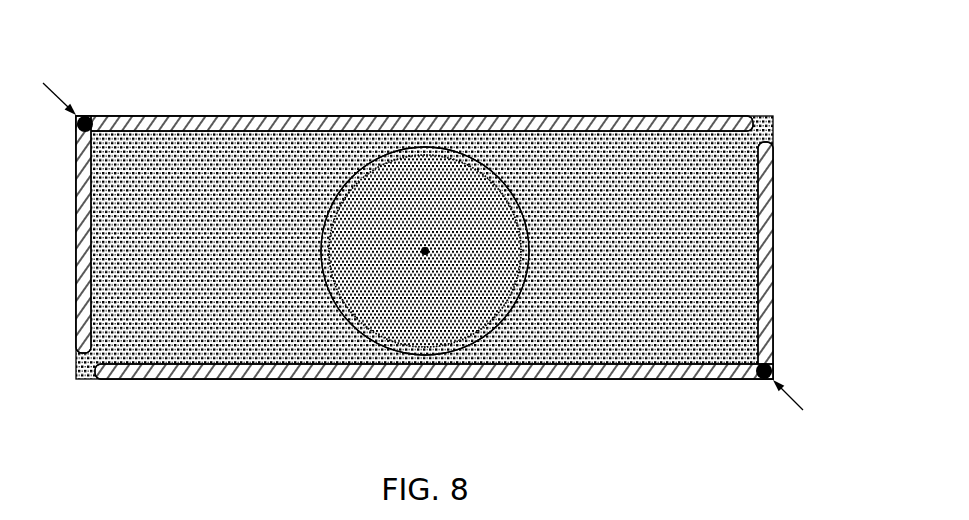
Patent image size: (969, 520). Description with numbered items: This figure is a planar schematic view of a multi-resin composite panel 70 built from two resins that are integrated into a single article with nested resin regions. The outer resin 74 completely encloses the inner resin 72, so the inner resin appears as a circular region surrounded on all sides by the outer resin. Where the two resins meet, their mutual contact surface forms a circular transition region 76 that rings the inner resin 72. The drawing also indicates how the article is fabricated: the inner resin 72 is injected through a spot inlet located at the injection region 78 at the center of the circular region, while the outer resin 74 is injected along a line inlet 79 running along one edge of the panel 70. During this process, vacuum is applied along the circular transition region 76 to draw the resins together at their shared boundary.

The multi-resin composite panel 70 is at (683, 42).
The resin 72 is at (403, 280).
The resin 74 is at (170, 345).
The circular transition region 76 is at (366, 162).
The injection region 78 is at (426, 250).
The line inlet 79 is at (640, 117).